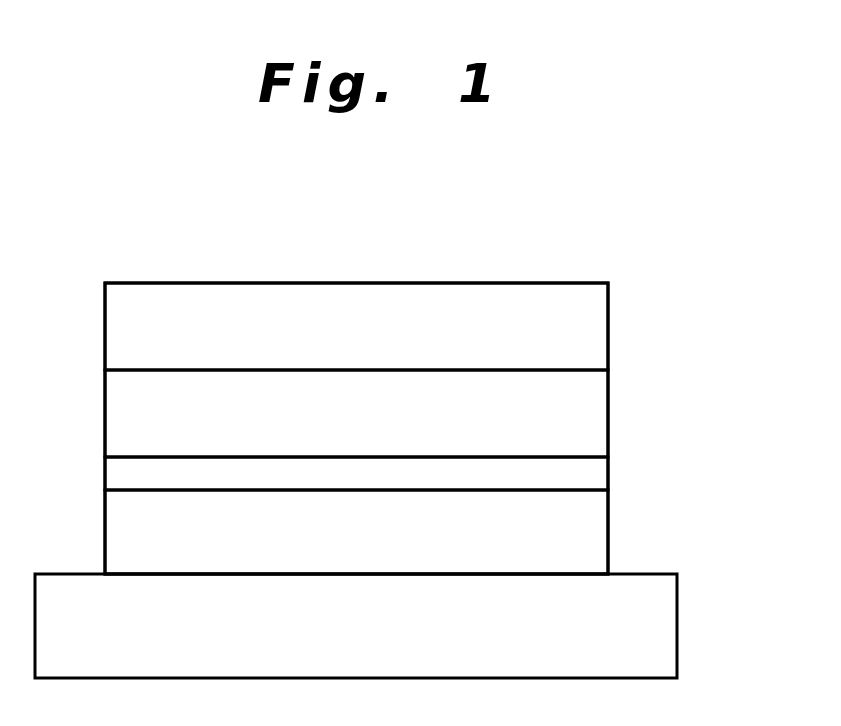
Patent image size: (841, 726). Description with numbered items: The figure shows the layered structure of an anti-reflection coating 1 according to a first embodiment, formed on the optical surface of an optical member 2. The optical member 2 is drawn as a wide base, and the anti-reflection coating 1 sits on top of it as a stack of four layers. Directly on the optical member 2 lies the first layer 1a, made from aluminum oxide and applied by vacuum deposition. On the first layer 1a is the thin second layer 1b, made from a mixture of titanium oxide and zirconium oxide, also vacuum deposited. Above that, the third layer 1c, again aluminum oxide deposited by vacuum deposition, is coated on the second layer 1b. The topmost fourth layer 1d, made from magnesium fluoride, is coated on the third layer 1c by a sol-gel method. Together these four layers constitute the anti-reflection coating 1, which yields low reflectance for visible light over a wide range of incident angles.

The anti-reflection coating 1 is at (450, 428).
The first layer 1a is at (406, 532).
The second layer 1b is at (598, 481).
The third layer 1c is at (598, 421).
The fourth layer 1d is at (598, 336).
The optical member 2 is at (668, 622).